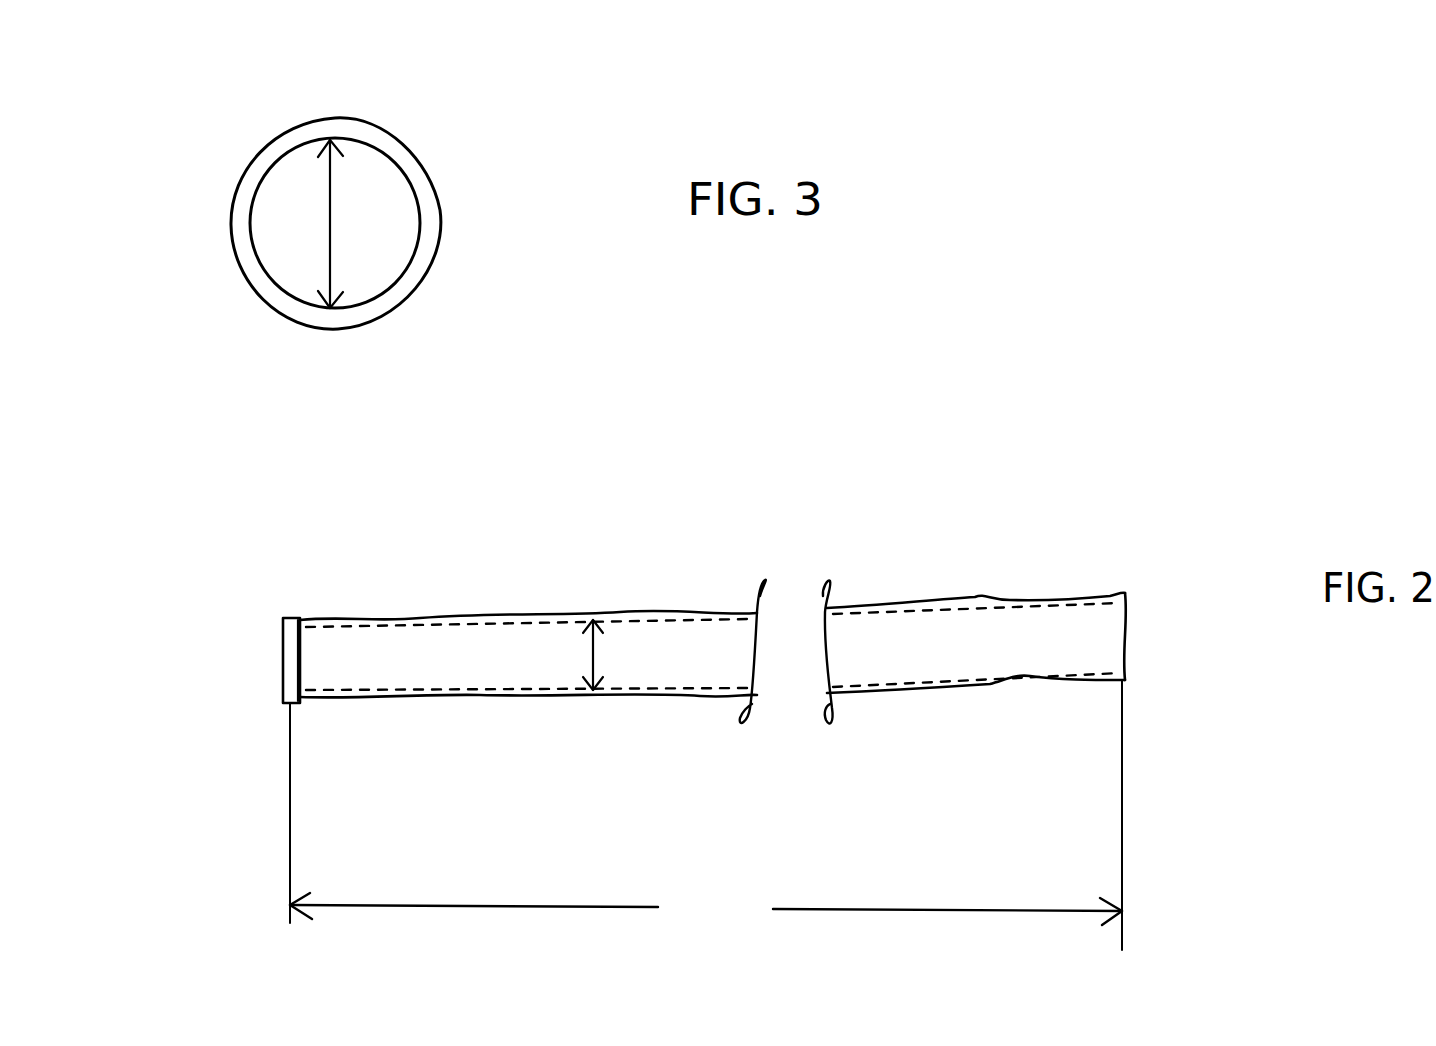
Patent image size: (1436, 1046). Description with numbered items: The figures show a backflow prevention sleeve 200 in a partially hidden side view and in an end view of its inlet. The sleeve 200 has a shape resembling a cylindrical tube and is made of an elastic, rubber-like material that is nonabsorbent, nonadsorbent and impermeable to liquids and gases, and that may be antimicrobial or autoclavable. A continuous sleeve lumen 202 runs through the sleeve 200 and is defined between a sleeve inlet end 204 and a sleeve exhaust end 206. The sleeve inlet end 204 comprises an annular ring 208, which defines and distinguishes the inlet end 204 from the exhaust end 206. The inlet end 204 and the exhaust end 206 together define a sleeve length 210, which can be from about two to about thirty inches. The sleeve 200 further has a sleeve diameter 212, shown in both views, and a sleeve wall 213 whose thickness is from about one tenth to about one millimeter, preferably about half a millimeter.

In FIG. 3, the backflow prevention sleeve 200 is at (452, 145).
In FIG. 2, the backflow prevention sleeve 200 is at (883, 520).
In FIG. 3, the sleeve lumen 202 is at (373, 230).
In FIG. 2, the sleeve lumen 202 is at (653, 640).
In FIG. 3, the sleeve inlet end 204 is at (303, 330).
In FIG. 2, the sleeve inlet end 204 is at (283, 643).
In FIG. 2, the sleeve exhaust end 206 is at (1125, 633).
In FIG. 3, the annular ring 208 is at (393, 303).
In FIG. 2, the annular ring 208 is at (285, 618).
In FIG. 2, the sleeve length 210 is at (706, 815).
In FIG. 3, the sleeve diameter 212 is at (323, 224).
In FIG. 2, the sleeve diameter 212 is at (594, 655).
In FIG. 2, the sleeve wall 213 is at (302, 698).